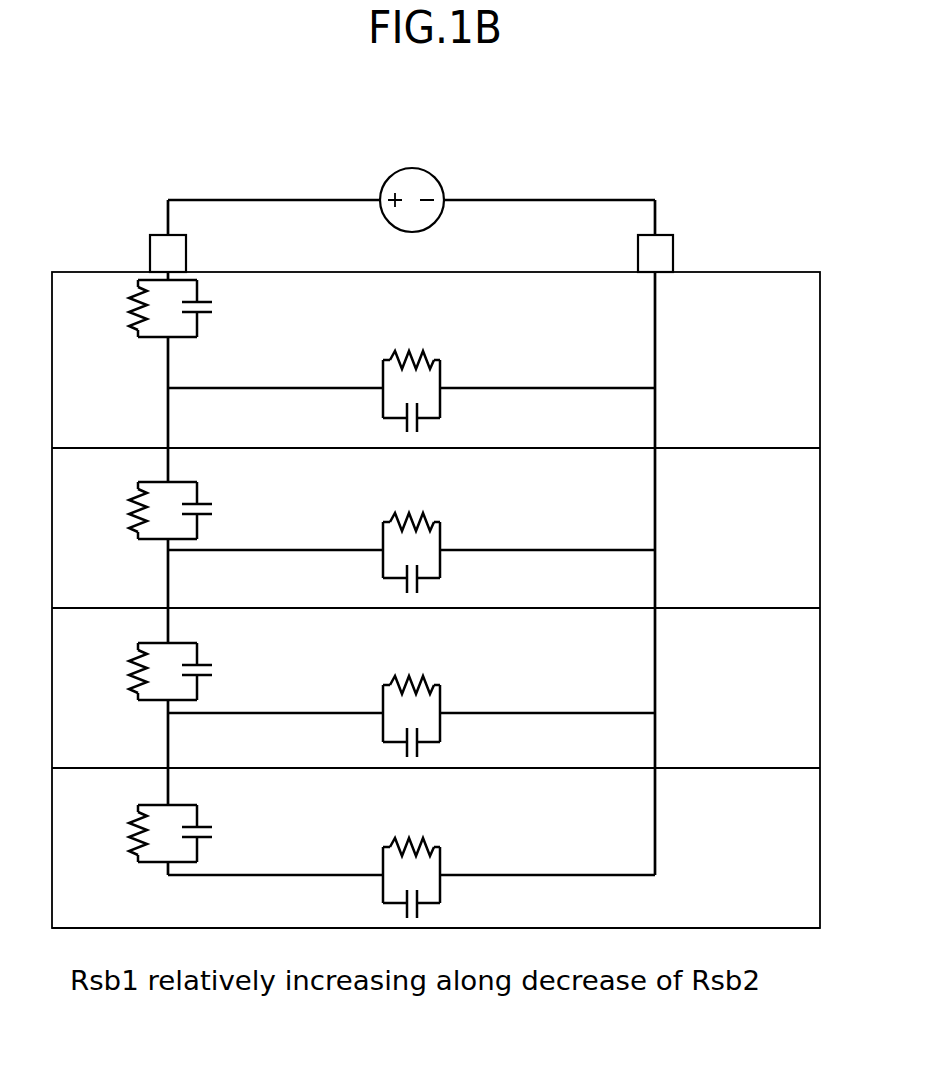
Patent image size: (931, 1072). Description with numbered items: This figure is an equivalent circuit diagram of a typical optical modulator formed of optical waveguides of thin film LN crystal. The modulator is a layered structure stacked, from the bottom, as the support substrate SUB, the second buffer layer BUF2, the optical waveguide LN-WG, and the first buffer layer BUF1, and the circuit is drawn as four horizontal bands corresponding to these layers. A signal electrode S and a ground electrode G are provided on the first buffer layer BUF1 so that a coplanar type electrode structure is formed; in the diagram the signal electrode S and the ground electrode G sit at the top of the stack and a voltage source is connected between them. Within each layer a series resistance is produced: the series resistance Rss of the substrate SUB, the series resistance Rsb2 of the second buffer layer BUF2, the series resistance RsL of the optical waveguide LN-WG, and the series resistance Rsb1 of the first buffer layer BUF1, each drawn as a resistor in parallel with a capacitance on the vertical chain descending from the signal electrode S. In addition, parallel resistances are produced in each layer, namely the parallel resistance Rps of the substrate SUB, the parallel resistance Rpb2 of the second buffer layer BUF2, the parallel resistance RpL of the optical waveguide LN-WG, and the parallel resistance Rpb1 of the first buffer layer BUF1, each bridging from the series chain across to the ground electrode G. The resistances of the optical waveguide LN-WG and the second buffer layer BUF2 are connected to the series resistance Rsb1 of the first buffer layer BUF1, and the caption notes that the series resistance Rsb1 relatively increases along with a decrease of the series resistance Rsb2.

The signal electrode S is at (168, 253).
The ground electrode G is at (655, 253).
The series resistance of the first buffer layer Rsb1 is at (137, 308).
The series resistance of the optical waveguide RsL is at (147, 510).
The series resistance of the second buffer layer Rsb2 is at (137, 671).
The series resistance of the substrate Rss is at (147, 833).
The parallel resistance of the first buffer layer Rpb1 is at (414, 374).
The parallel resistance of the optical waveguide RpL is at (411, 536).
The parallel resistance of the second buffer layer Rpb2 is at (414, 699).
The parallel resistance of the substrate Rps is at (411, 861).
The first buffer layer BUF1 is at (436, 396).
The optical waveguide LN-WG is at (436, 562).
The second buffer layer BUF2 is at (436, 722).
The support substrate SUB is at (436, 881).